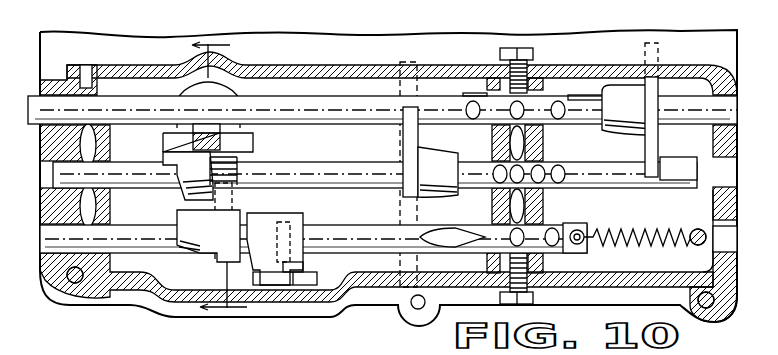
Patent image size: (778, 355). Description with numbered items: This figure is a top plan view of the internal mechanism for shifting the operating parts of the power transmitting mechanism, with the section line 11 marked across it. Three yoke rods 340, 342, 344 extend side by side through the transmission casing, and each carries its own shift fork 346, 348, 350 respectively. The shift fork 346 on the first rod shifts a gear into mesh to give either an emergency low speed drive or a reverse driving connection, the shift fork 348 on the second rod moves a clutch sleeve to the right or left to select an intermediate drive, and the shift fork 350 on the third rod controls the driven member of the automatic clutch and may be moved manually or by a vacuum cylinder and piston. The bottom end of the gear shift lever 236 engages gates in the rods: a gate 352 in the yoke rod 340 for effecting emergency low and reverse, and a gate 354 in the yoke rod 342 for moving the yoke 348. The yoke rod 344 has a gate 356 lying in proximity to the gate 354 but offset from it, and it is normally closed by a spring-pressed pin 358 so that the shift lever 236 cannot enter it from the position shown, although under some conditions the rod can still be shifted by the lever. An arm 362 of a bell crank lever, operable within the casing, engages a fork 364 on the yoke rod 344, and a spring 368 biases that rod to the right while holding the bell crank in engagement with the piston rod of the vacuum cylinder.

The section line 11— 11 is at (216, 178).
The gear shift lever 236 is at (237, 70).
The yoke rod 340 is at (583, 100).
The yoke rod 342 is at (675, 163).
The yoke rod 344 is at (565, 228).
The shift fork 346 is at (657, 122).
The shift fork 348 is at (418, 132).
The shift fork 350 is at (290, 225).
The gate 352 is at (192, 66).
The gate 354 is at (250, 141).
The gate 356 is at (255, 168).
The spring-pressed pin 358 is at (205, 178).
The arm 362 is at (293, 280).
The fork 364 is at (306, 278).
The spring 368 is at (665, 220).